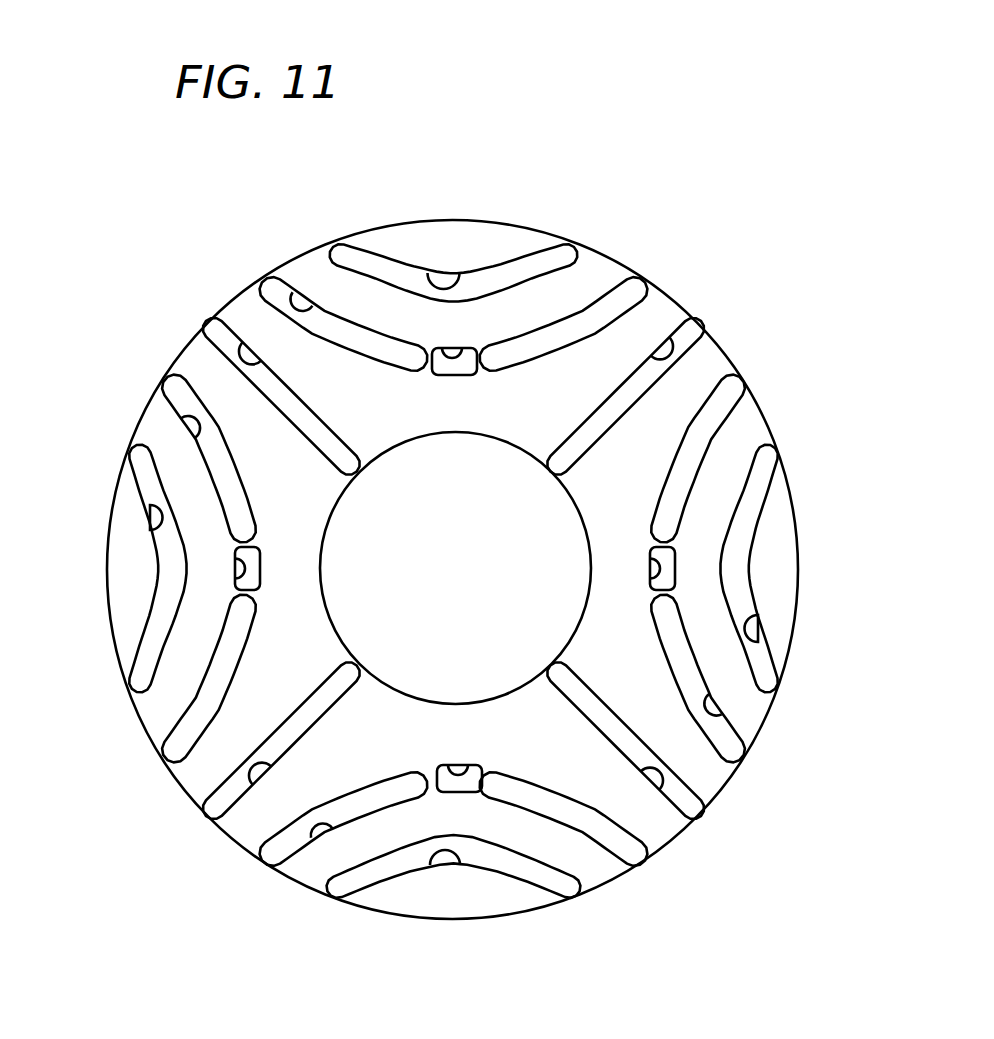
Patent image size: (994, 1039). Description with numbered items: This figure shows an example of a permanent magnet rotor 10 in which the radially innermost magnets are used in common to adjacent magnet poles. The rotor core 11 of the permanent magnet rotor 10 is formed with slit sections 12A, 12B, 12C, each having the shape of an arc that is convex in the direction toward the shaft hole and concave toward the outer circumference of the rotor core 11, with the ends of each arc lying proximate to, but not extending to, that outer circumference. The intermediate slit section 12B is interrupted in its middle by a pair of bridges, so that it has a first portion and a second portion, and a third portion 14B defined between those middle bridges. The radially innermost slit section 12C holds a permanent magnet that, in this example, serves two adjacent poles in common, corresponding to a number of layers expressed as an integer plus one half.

The permanent magnet rotor 10 is at (672, 180).
The rotor core 11 is at (778, 529).
The slit section 12A is at (443, 289).
The intermediate slit section 12B is at (301, 311).
The slit section 12C is at (241, 354).
The third portion 14B is at (455, 356).